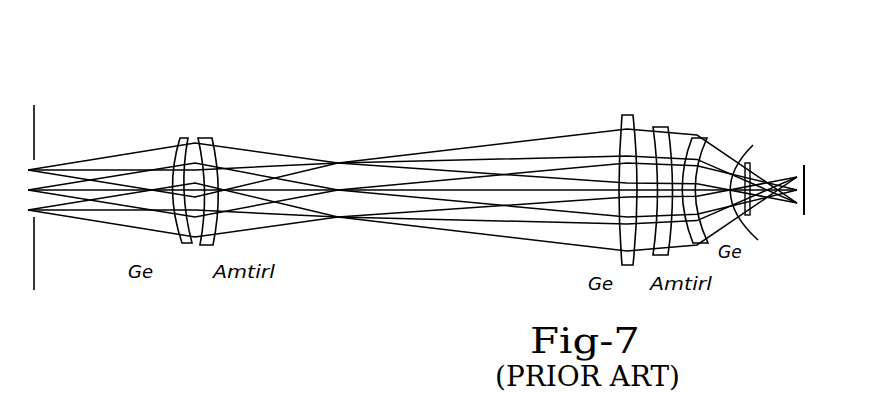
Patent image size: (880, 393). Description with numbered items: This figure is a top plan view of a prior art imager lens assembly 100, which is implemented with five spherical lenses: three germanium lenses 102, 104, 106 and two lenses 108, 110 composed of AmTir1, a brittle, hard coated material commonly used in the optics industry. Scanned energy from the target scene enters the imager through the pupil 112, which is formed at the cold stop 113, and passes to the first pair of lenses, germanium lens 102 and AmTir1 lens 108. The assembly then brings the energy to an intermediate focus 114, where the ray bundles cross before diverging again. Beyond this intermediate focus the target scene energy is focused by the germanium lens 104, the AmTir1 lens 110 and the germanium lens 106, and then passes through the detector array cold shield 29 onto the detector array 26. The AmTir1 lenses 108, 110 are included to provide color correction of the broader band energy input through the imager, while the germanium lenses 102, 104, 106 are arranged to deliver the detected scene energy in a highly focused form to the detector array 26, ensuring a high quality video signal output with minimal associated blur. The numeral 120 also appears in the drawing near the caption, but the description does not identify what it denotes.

The prior art imager lens assembly 100 is at (750, 82).
The germanium lens 102 is at (182, 136).
The AmTir1 lens 108 is at (208, 137).
The germanium lens 104 is at (625, 115).
The AmTir1 lens 110 is at (658, 127).
The germanium lens 106 is at (700, 137).
The pupil 112 is at (37, 162).
The cold stop 113 is at (33, 273).
The intermediate focus 114 is at (338, 154).
The detector array cold shield 29 is at (748, 167).
The detector array 26 is at (807, 184).
The dewar 120 is at (757, 392).